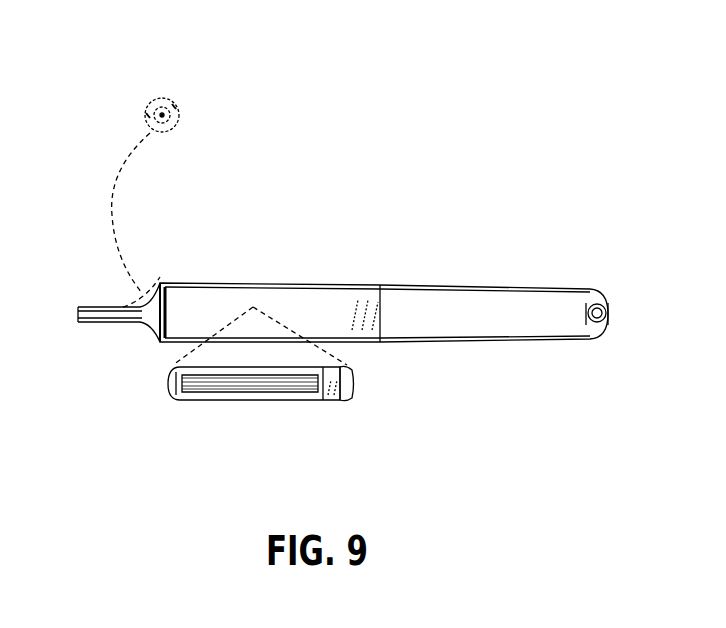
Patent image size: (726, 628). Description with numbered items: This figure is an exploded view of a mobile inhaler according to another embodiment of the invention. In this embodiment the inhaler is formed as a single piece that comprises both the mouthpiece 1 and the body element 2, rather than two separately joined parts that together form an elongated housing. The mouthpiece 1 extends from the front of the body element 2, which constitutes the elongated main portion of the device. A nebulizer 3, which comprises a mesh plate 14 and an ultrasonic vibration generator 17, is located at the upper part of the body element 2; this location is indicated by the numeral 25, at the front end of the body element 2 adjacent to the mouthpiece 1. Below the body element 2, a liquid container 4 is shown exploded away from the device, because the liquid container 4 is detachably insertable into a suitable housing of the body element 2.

The mouthpiece 1 is at (95, 323).
The body element 2 is at (504, 296).
The nebulizer 3 is at (158, 96).
The liquid container 4 is at (243, 400).
The mesh plate 14 is at (146, 113).
The ultrasonic vibration generator 17 is at (173, 105).
The location of the nebulizer 25 is at (158, 281).